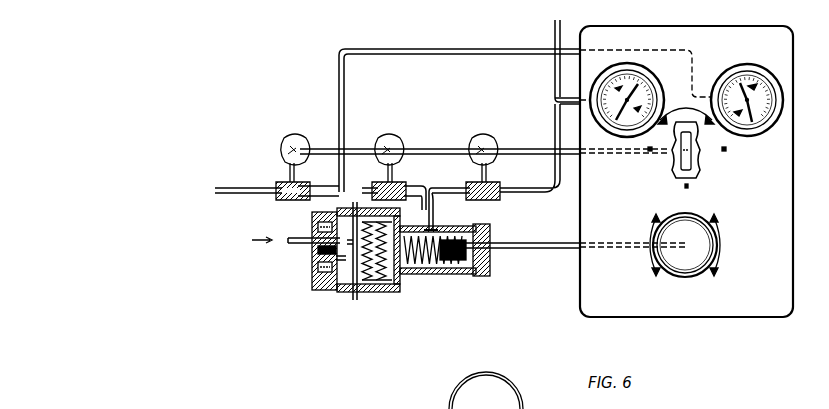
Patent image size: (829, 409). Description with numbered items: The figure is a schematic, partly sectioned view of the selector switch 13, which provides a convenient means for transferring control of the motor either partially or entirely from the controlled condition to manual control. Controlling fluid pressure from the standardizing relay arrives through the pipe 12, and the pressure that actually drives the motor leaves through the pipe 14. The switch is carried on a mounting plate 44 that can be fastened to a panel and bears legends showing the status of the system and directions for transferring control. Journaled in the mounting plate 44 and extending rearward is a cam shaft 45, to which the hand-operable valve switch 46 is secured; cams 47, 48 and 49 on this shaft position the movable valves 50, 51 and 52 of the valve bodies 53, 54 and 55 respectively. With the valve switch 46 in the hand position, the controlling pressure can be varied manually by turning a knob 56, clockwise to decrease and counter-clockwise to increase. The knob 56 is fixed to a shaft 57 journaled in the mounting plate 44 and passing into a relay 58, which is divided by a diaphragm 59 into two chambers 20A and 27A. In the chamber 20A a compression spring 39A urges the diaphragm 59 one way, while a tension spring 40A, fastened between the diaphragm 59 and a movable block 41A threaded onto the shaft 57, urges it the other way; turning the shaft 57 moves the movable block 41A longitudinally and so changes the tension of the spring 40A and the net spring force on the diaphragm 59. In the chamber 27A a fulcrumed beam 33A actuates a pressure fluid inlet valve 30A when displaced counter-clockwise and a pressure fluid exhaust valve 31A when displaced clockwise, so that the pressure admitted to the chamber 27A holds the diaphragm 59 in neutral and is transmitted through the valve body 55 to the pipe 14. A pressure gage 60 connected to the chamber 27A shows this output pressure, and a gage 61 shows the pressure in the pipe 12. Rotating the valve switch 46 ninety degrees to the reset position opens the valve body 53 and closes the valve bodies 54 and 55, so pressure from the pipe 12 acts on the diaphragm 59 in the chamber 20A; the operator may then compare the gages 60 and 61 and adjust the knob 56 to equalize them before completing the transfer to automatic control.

The pipe 12 is at (555, 30).
The selector switch 13 is at (522, 334).
The pipe 14 is at (235, 196).
The chamber 20A is at (406, 274).
The chamber 27A is at (322, 292).
The pressure fluid inlet valve 30A is at (300, 238).
The pressure fluid exhaust valve 31A is at (316, 272).
The fulcrumed beam 33A is at (340, 210).
The compression spring 39A is at (392, 284).
The tension spring 40A is at (430, 230).
The movable block 41A is at (466, 230).
The mounting plate 44 is at (684, 317).
The cam shaft 45 is at (505, 152).
The valve switch 46 is at (702, 168).
The cam 47 is at (471, 142).
The cam 48 is at (376, 142).
The cam 49 is at (284, 142).
The movable valve 50 is at (478, 176).
The movable valve 51 is at (394, 172).
The movable valve 52 is at (296, 172).
The valve body 53 is at (496, 200).
The valve body 54 is at (374, 182).
The valve body 55 is at (278, 184).
The knob 56 is at (702, 277).
The shaft 57 is at (534, 249).
The relay 58 is at (480, 278).
The diaphragm 59 is at (360, 294).
The pressure gage 60 is at (750, 64).
The gage 61 is at (645, 72).